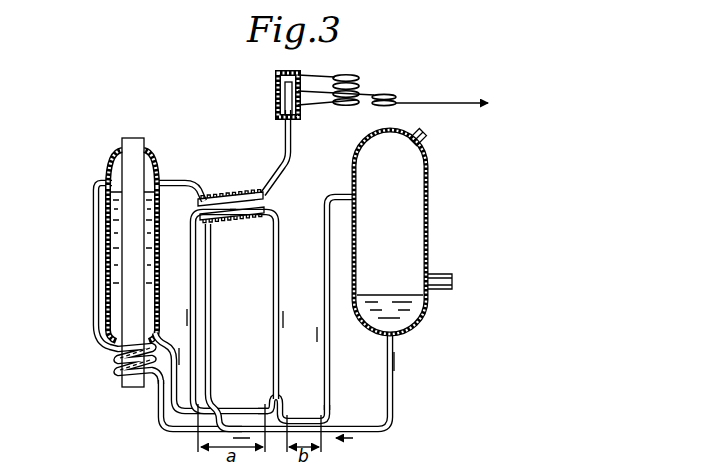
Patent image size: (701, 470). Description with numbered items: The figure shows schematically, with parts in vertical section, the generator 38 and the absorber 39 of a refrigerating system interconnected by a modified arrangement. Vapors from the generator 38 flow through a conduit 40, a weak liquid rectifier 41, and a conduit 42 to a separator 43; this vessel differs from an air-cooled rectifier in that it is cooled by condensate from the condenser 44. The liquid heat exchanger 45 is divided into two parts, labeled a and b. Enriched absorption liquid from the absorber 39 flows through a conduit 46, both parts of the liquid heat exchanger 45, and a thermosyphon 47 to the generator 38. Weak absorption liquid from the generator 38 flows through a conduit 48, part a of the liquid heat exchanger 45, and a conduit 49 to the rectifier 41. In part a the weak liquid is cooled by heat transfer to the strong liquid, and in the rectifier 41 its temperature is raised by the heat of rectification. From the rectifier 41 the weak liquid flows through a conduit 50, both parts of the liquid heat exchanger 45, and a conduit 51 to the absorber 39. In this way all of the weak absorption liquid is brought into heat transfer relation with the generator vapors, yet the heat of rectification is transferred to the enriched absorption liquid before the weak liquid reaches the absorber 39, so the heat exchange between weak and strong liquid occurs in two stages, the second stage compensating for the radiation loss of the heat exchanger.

The generator 38 is at (104, 179).
The absorber 39 is at (429, 236).
The conduit 40 is at (164, 181).
The weak liquid rectifier 41 is at (226, 221).
The conduit 42 is at (289, 163).
The separator 43 is at (278, 90).
The condenser 44 is at (342, 78).
The liquid heat exchanger 45 is at (270, 391).
The conduit 46 is at (392, 405).
The thermosyphon 47 is at (100, 346).
The conduit 48 is at (164, 333).
The conduit 49 is at (278, 272).
The conduit 50 is at (197, 333).
The conduit 51 is at (329, 357).